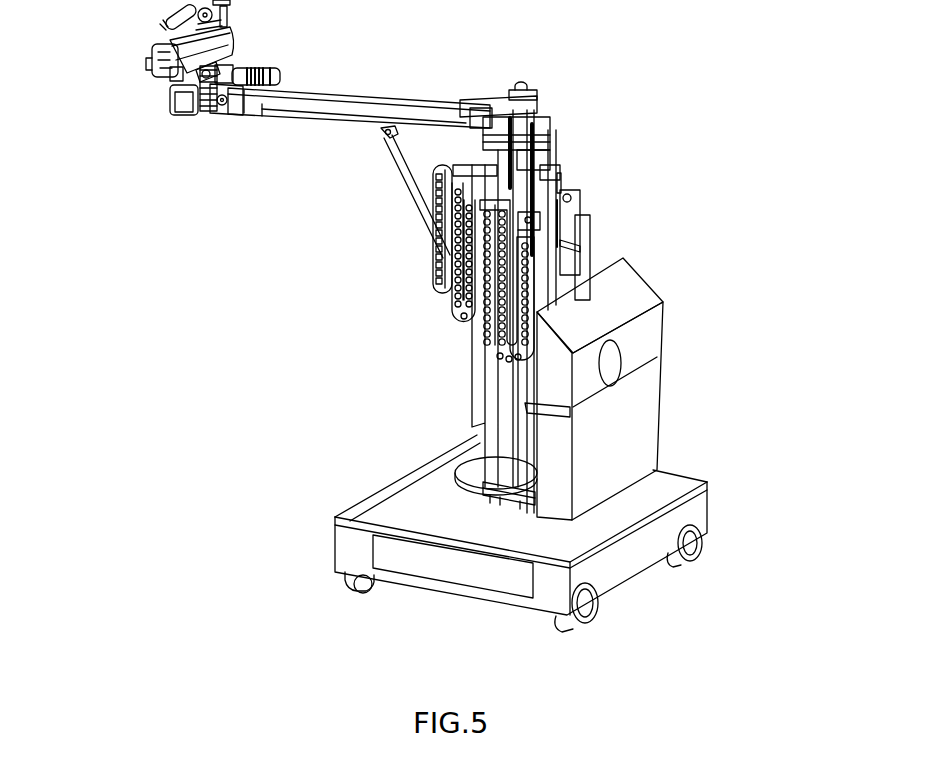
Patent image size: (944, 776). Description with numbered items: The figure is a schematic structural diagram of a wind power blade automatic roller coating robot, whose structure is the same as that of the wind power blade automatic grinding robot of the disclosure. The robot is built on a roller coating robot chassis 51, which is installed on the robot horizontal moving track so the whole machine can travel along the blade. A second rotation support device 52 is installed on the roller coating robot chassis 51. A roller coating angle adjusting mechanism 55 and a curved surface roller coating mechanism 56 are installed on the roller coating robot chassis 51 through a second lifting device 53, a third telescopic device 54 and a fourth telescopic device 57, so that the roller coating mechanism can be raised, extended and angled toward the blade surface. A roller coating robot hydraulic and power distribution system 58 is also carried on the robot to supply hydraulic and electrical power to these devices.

The roller coating robot chassis 51 is at (358, 550).
The second rotation support device 52 is at (500, 502).
The second lifting device 53 is at (455, 326).
The third telescopic device 54 is at (407, 183).
The roller coating angle adjusting mechanism 55 is at (212, 78).
The curved surface roller coating mechanism 56 is at (233, 30).
The fourth telescopic device 57 is at (533, 122).
The roller coating robot hydraulic and power distribution system 58 is at (623, 443).